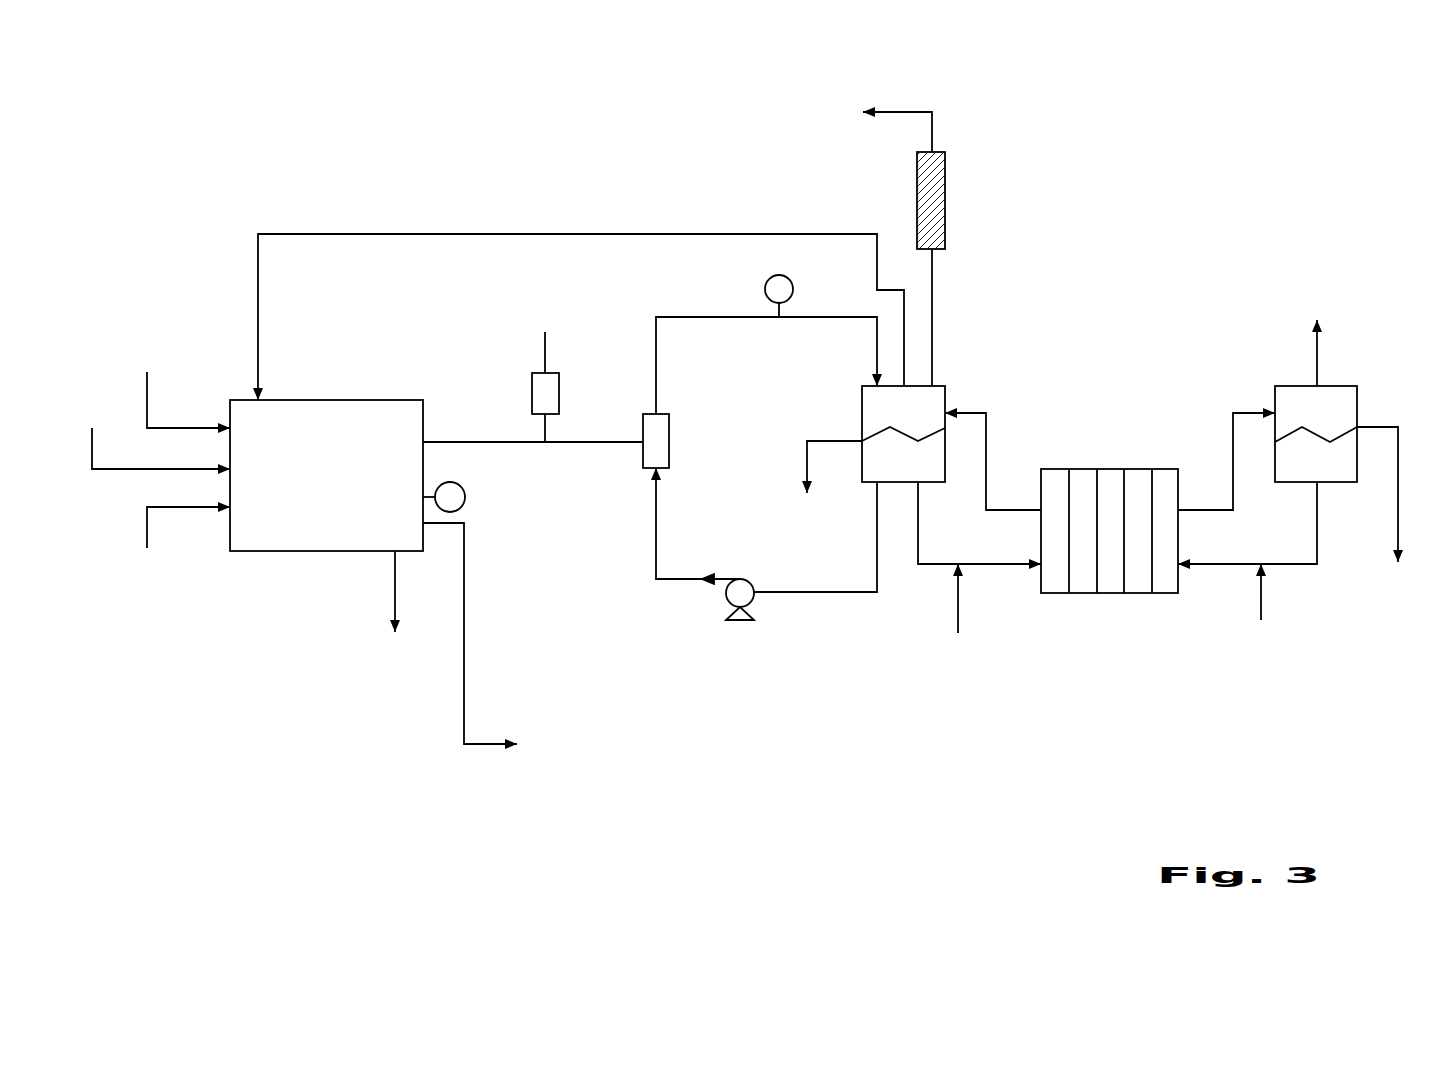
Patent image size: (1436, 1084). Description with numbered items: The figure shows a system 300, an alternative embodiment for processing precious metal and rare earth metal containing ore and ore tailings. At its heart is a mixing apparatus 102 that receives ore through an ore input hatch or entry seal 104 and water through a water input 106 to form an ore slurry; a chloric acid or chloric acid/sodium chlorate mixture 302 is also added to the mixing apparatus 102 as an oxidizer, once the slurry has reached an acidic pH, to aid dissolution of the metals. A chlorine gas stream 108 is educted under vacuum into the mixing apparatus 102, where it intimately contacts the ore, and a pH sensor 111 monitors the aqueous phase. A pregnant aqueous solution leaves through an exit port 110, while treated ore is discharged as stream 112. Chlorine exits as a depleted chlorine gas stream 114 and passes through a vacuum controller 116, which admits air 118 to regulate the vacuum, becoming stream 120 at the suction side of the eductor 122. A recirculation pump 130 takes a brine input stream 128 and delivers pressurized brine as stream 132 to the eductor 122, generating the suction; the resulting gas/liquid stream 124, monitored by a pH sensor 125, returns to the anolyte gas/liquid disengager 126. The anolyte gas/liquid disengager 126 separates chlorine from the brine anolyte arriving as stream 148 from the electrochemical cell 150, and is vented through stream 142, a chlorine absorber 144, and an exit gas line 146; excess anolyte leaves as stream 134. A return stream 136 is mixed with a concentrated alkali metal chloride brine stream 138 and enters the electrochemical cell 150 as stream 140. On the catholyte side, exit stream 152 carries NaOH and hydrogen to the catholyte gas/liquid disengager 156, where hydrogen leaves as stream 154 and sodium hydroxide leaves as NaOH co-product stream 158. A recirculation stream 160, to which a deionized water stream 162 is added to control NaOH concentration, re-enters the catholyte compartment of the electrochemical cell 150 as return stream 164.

The system 300 is at (1110, 250).
The mixing apparatus 102 is at (327, 385).
The ore input hatch or entry seal 104 is at (180, 381).
The water input 106 is at (183, 549).
The chloric acid or chloric acid/sodium chlorate mixture 302 is at (154, 430).
The chlorine gas stream 108 is at (581, 300).
The exit port 110 is at (393, 611).
The pH sensor 111 is at (468, 498).
The treated ore stream 112 is at (493, 640).
The depleted chlorine gas stream 114 is at (533, 426).
The vacuum controller 116 is at (525, 368).
The air 118 is at (545, 333).
The stream 120 is at (578, 415).
The eductor 122 is at (683, 441).
The gas/liquid stream 124 is at (766, 349).
The pH sensor 125 is at (800, 293).
The anolyte gas/liquid disengager 126 is at (848, 414).
The brine input stream 128 is at (815, 555).
The recirculation pump 130 is at (740, 619).
The stream 132 is at (698, 526).
The stream 134 is at (827, 487).
The return stream 136 is at (979, 523).
The concentrated alkali metal chloride brine stream 138 is at (961, 616).
The stream 140 is at (985, 582).
The stream 142 is at (955, 317).
The chlorine absorber 144 is at (956, 200).
The exit gas line 146 is at (871, 125).
The stream 148 is at (993, 461).
The electrochemical cell 150 is at (1109, 455).
The exit stream 152 is at (1226, 461).
The stream 154 is at (1318, 333).
The catholyte gas/liquid disengager 156 is at (1365, 380).
The NaOH co-product stream 158 is at (1389, 516).
The recirculation stream 160 is at (1283, 541).
The deionized water stream 162 is at (1261, 610).
The return stream 164 is at (1214, 583).